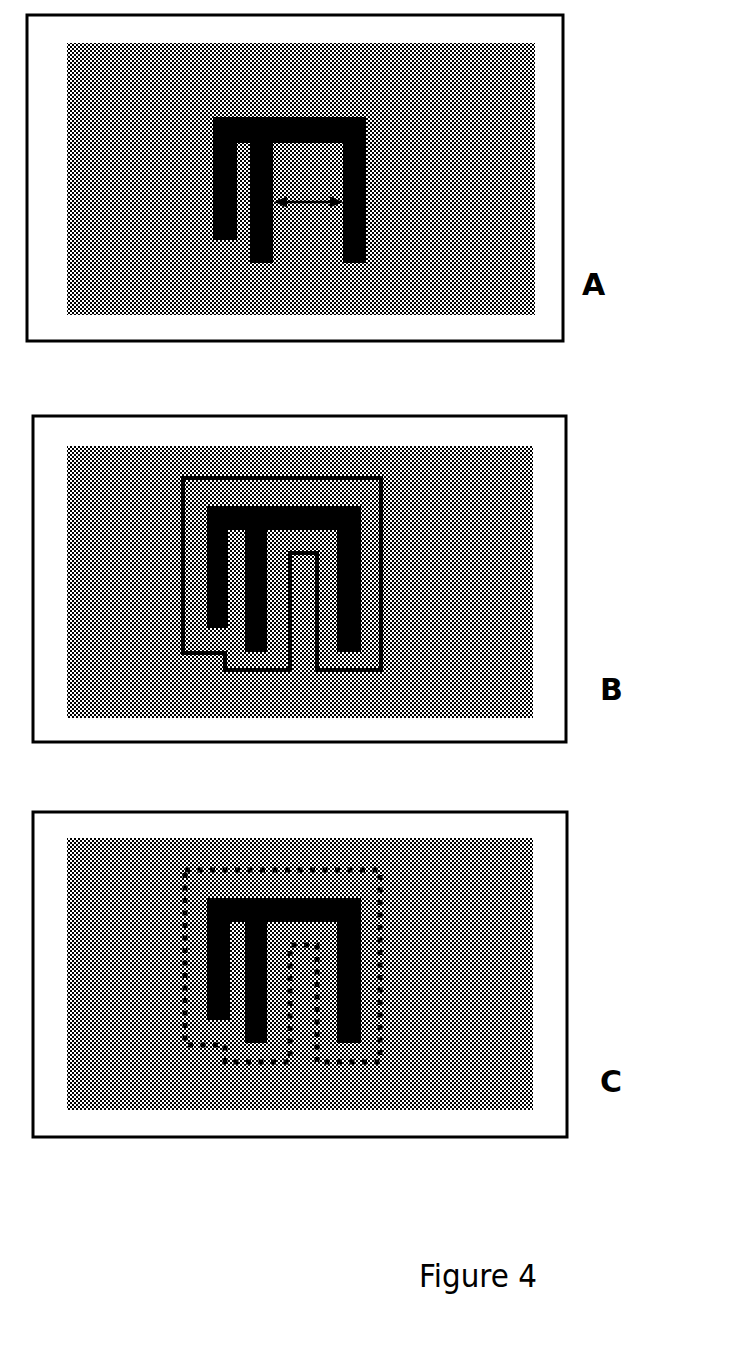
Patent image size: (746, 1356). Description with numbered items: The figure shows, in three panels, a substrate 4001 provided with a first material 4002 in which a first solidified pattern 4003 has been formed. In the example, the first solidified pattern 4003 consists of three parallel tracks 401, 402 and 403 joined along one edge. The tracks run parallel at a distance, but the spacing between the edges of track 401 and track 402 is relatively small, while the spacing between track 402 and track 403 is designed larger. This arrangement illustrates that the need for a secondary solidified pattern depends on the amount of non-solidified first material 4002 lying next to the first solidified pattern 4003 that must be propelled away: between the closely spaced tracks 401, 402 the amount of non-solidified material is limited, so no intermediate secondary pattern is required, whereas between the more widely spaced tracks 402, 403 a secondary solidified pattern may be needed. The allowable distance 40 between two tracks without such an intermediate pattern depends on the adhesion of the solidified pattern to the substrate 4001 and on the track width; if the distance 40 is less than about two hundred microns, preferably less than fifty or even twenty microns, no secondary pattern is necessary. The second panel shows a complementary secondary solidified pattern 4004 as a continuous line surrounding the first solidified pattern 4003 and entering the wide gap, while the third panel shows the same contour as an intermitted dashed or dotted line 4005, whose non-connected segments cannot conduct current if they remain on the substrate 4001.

The substrate 4001 is at (351, 576).
The first material 4002 is at (371, 576).
The first solidified pattern 4003 is at (441, 580).
The distance 40 is at (461, 230).
The track 401 is at (186, 220).
The track 402 is at (301, 227).
The track 403 is at (396, 227).
The secondary solidified pattern 4004 is at (429, 574).
The dashed or dotted line 4005 is at (430, 966).